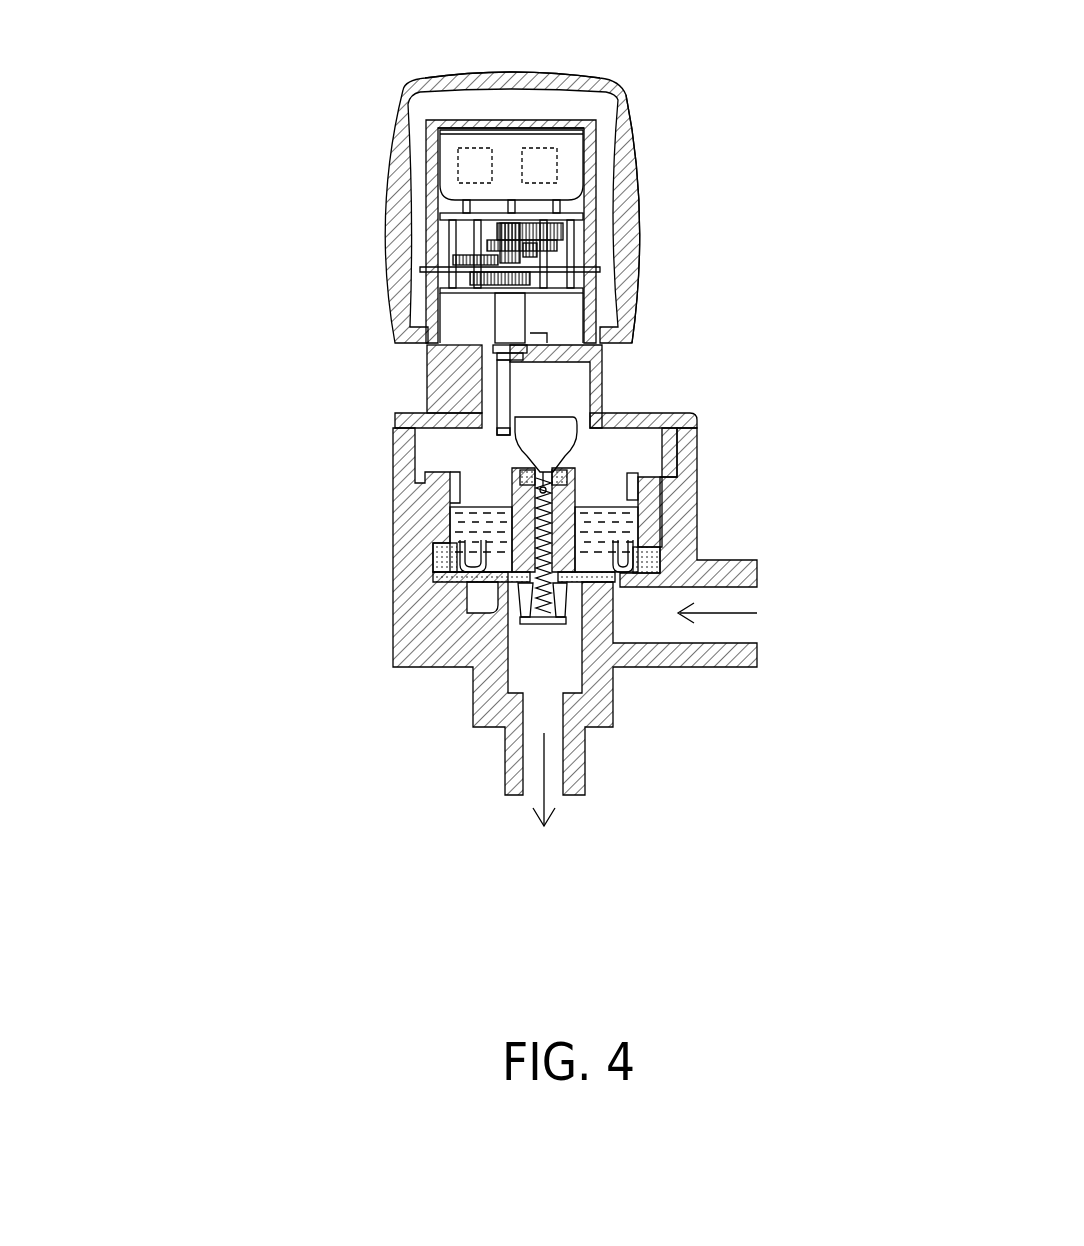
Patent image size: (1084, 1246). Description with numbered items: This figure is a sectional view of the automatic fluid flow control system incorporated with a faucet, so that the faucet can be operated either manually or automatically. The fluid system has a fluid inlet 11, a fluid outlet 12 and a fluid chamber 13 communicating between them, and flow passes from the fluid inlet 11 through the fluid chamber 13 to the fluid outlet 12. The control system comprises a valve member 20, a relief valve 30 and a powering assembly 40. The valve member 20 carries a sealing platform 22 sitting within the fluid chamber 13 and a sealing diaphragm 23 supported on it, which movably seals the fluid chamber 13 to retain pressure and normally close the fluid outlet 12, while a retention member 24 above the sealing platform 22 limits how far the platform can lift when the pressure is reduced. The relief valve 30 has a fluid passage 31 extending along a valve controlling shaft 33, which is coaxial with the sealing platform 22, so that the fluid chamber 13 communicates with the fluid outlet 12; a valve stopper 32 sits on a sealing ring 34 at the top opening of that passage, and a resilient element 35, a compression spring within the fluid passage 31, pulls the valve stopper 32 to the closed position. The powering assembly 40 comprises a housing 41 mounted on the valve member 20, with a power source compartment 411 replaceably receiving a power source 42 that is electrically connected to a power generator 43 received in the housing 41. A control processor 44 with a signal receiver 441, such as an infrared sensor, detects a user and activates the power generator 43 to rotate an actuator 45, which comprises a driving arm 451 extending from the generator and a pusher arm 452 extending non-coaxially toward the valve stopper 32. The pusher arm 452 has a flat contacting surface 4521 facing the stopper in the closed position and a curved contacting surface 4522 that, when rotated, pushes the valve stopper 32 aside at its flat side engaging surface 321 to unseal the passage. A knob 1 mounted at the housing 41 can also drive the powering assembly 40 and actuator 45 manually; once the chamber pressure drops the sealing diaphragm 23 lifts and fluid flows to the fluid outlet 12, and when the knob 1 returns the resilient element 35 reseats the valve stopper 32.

The knob 1 is at (444, 88).
The fluid inlet 11 is at (752, 632).
The fluid outlet 12 is at (555, 753).
The fluid chamber 13 is at (617, 472).
The valve member 20 is at (302, 729).
The sealing platform 22 is at (525, 562).
The sealing diaphragm 23 is at (445, 565).
The retention member 24 is at (457, 505).
The relief valve 30 is at (775, 398).
The fluid passage 31 is at (457, 578).
The valve stopper 32 is at (600, 340).
The side engaging surface 321 is at (445, 490).
The valve controlling shaft 33 is at (583, 547).
The sealing ring 34 is at (550, 448).
The resilient element 35 is at (575, 508).
The powering assembly 40 is at (297, 153).
The housing 41 is at (498, 118).
The power source compartment 411 is at (549, 118).
The power source 42 is at (463, 170).
The power generator 43 is at (470, 242).
The control processor 44 is at (689, 72).
The signal receiver 441 is at (543, 166).
The actuator 45 is at (197, 279).
The driving arm 451 is at (513, 320).
The pusher arm 452 is at (248, 423).
The flat contacting surface 4521 is at (505, 388).
The curved contacting surface 4522 is at (502, 435).